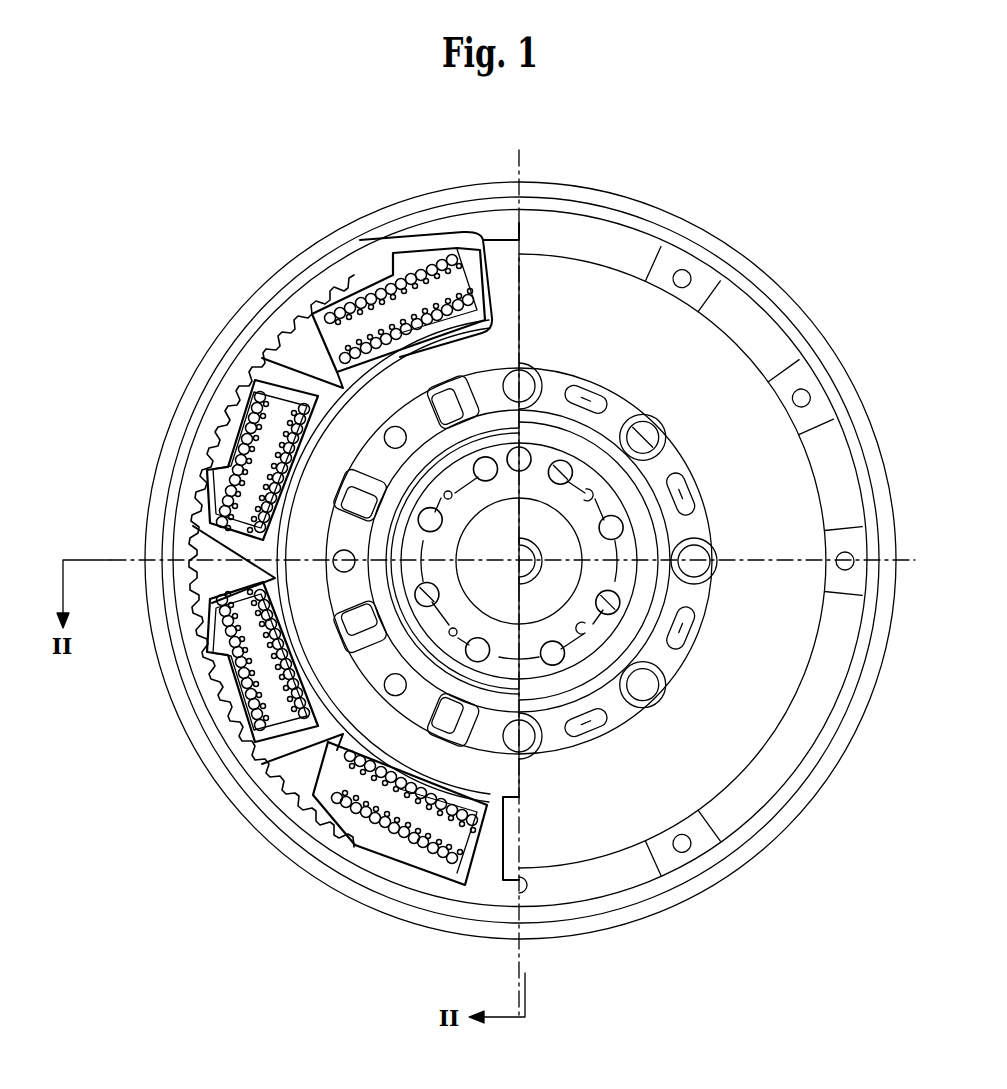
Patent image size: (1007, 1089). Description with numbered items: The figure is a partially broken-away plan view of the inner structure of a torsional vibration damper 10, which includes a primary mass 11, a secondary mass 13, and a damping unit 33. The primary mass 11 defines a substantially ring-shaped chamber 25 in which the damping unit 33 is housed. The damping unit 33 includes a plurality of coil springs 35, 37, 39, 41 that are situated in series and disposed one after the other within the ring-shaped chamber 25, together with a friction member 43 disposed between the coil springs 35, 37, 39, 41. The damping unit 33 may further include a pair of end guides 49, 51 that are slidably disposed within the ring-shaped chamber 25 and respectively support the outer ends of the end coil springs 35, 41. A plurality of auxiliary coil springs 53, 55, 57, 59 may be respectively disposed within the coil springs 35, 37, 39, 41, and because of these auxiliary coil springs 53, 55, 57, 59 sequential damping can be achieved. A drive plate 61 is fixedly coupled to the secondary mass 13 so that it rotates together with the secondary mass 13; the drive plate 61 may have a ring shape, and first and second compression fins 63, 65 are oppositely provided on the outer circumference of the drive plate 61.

The torsional vibration damper 10 is at (748, 214).
The primary mass 11 is at (213, 765).
The secondary mass 13 is at (730, 362).
The ring-shaped chamber 25 is at (227, 690).
The damping unit 33 is at (177, 595).
The coil spring 35 is at (385, 288).
The coil spring 37 is at (245, 440).
The coil spring 39 is at (240, 670).
The coil spring 41 is at (378, 823).
The friction member 43 is at (262, 315).
The end guide 49 is at (430, 240).
The end guide 51 is at (440, 877).
The auxiliary coil spring 53 is at (370, 297).
The auxiliary coil spring 55 is at (237, 460).
The auxiliary coil spring 57 is at (247, 683).
The auxiliary coil spring 59 is at (397, 832).
The drive plate 61 is at (380, 740).
The first compression fin 63 is at (492, 243).
The second compression fin 65 is at (520, 885).